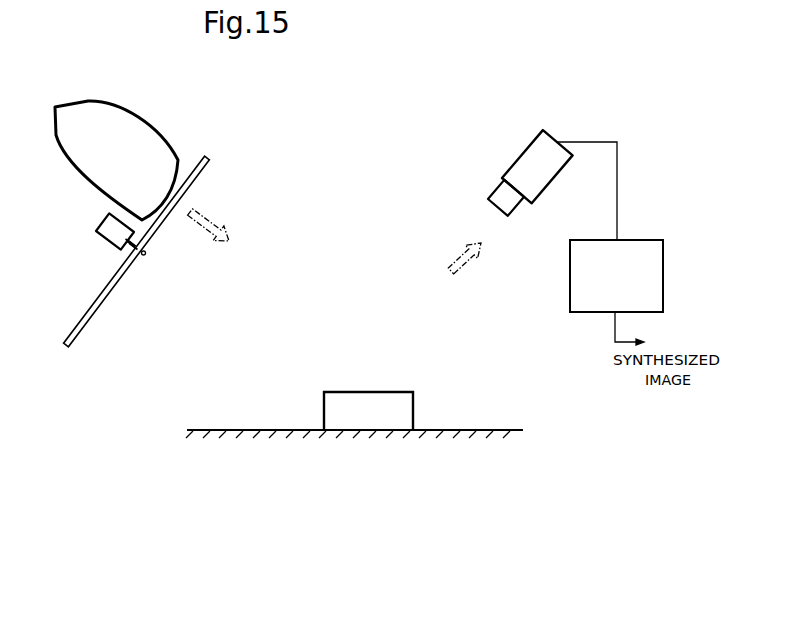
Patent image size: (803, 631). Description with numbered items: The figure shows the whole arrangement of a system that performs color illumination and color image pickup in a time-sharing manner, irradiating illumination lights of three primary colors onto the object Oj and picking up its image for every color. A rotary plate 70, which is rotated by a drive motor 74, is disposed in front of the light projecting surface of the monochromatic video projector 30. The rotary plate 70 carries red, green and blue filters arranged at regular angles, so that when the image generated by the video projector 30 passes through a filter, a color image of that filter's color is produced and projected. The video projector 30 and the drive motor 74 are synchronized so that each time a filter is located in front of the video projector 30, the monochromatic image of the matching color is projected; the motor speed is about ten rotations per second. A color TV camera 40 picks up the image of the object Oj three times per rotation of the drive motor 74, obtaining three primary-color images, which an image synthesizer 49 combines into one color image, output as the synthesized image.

The monochromatic video projector 30 is at (152, 138).
The rotary plate 70 is at (96, 307).
The drive motor 74 is at (98, 223).
The color TV camera 40 is at (520, 158).
The image synthesizer 49 is at (650, 240).
The object Oj is at (372, 392).